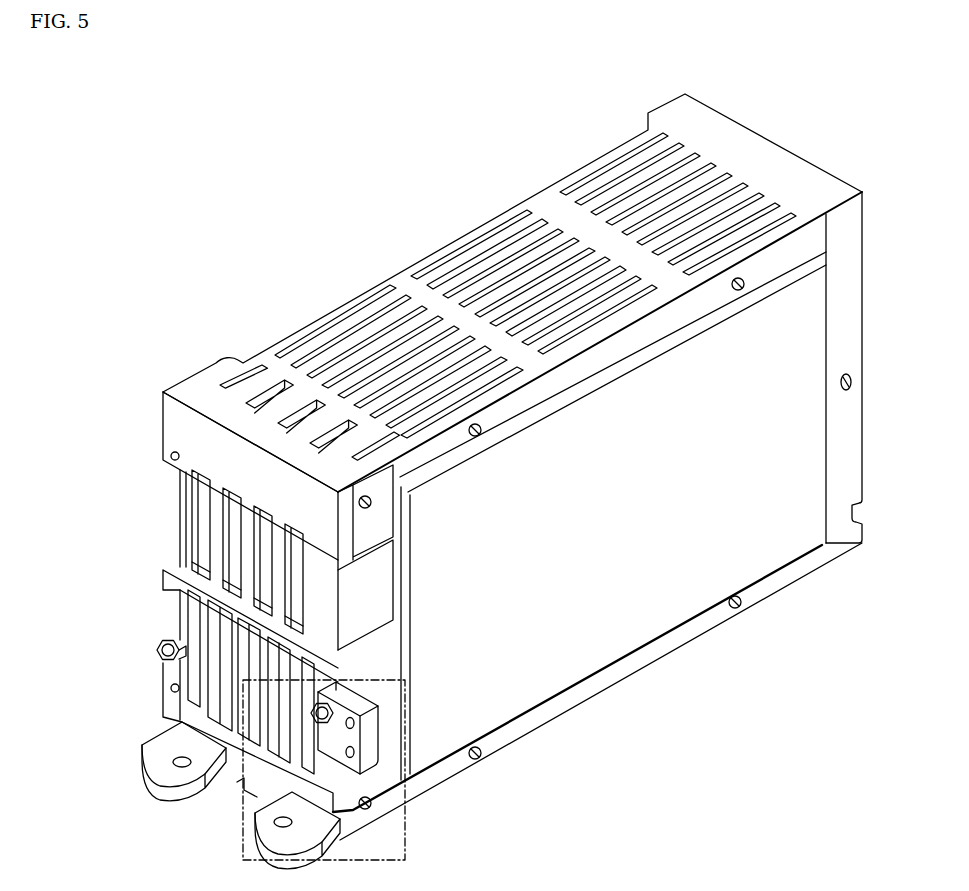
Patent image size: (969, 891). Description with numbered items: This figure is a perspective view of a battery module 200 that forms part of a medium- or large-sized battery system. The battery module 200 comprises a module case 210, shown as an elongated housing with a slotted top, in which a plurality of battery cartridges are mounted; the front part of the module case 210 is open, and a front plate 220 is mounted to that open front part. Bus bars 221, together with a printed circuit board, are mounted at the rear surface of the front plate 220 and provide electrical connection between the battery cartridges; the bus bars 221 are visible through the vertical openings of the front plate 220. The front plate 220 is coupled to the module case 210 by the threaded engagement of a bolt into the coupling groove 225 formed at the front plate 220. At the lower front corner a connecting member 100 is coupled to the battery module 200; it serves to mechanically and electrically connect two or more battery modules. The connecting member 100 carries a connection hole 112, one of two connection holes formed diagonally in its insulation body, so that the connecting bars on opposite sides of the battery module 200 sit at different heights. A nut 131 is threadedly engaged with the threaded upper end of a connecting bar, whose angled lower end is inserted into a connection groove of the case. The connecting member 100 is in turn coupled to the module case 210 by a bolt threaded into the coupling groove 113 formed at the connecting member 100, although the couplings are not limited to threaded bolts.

The battery module 200 is at (236, 204).
The module case 210 is at (778, 168).
The front plate 220 is at (178, 410).
The bus bars 221 is at (210, 525).
The coupling groove 225 is at (170, 458).
The nut 131 is at (158, 652).
The coupling groove 113 is at (362, 722).
The connection hole 112 is at (350, 755).
The connecting member 100 is at (390, 769).